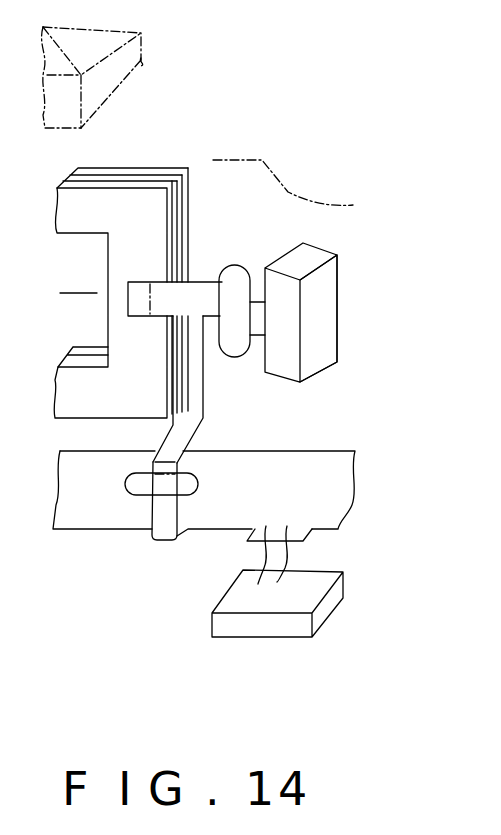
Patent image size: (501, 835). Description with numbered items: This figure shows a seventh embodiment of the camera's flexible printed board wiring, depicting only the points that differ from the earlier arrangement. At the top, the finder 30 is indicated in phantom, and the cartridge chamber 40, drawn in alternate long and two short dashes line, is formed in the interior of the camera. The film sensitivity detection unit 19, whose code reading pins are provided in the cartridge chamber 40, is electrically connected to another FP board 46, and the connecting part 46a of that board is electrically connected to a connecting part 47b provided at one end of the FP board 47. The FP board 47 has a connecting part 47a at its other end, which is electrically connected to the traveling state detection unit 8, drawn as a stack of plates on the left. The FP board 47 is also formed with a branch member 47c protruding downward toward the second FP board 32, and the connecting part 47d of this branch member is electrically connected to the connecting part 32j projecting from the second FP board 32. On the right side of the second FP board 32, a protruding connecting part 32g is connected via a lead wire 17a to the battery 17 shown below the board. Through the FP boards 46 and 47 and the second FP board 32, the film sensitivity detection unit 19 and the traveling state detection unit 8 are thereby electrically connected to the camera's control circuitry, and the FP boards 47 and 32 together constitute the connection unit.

The finder 30 is at (143, 60).
The cartridge chamber 40 is at (317, 200).
The traveling state detection unit 8 is at (150, 281).
The FP board 47 is at (205, 355).
The connecting part 47a is at (140, 281).
The connecting part 47b is at (236, 272).
The branch member 47c is at (192, 412).
The connecting part 47d is at (183, 494).
The FP board 46 is at (328, 312).
The connecting part 46a is at (234, 355).
The film sensitivity detection unit 19 is at (325, 328).
The second FP board 32 is at (233, 512).
The connecting part 32g is at (307, 538).
The connecting part 32j is at (135, 496).
The battery 17 is at (314, 592).
The lead wire 17a is at (297, 557).